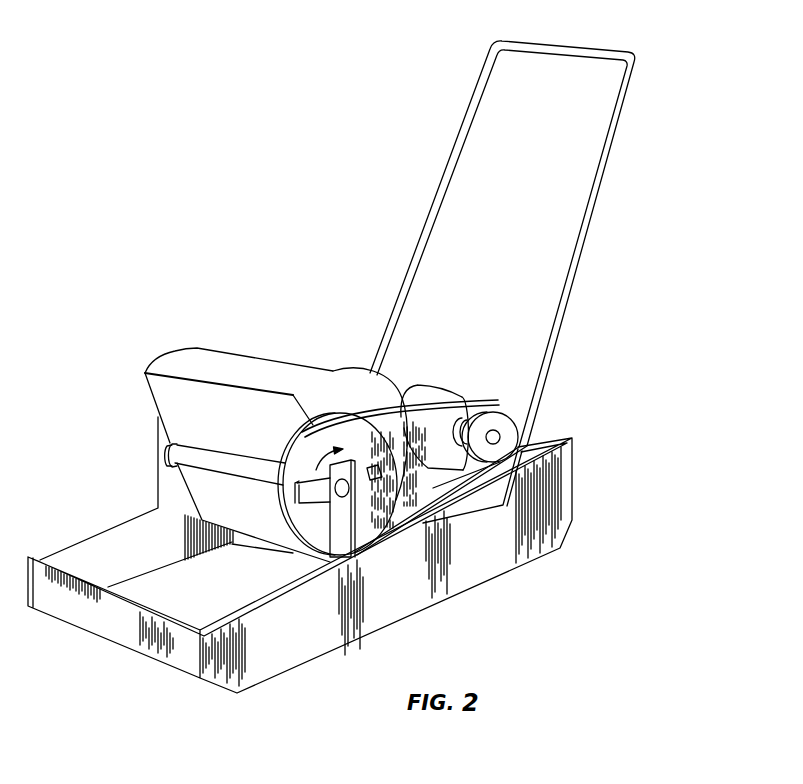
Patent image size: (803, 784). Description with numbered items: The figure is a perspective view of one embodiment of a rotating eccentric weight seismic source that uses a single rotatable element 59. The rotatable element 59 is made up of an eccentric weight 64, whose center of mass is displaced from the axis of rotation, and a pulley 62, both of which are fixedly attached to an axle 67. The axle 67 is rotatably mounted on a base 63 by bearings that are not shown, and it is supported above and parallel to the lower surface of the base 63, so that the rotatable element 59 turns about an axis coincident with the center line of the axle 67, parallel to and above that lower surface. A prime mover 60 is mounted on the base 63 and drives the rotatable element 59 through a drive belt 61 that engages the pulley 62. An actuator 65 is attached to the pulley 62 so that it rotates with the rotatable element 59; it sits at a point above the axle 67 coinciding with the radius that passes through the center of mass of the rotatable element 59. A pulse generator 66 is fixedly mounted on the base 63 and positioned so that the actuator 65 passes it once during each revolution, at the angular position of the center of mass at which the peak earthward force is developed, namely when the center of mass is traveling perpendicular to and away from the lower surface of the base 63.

The rotatable element 59 is at (165, 326).
The prime mover 60 is at (430, 396).
The drive belt 61 is at (457, 503).
The pulley 62 is at (312, 447).
The base 63 is at (88, 553).
The eccentric weight 64 is at (283, 373).
The actuator 65 is at (377, 468).
The pulse generator 66 is at (293, 488).
The axle 67 is at (188, 456).